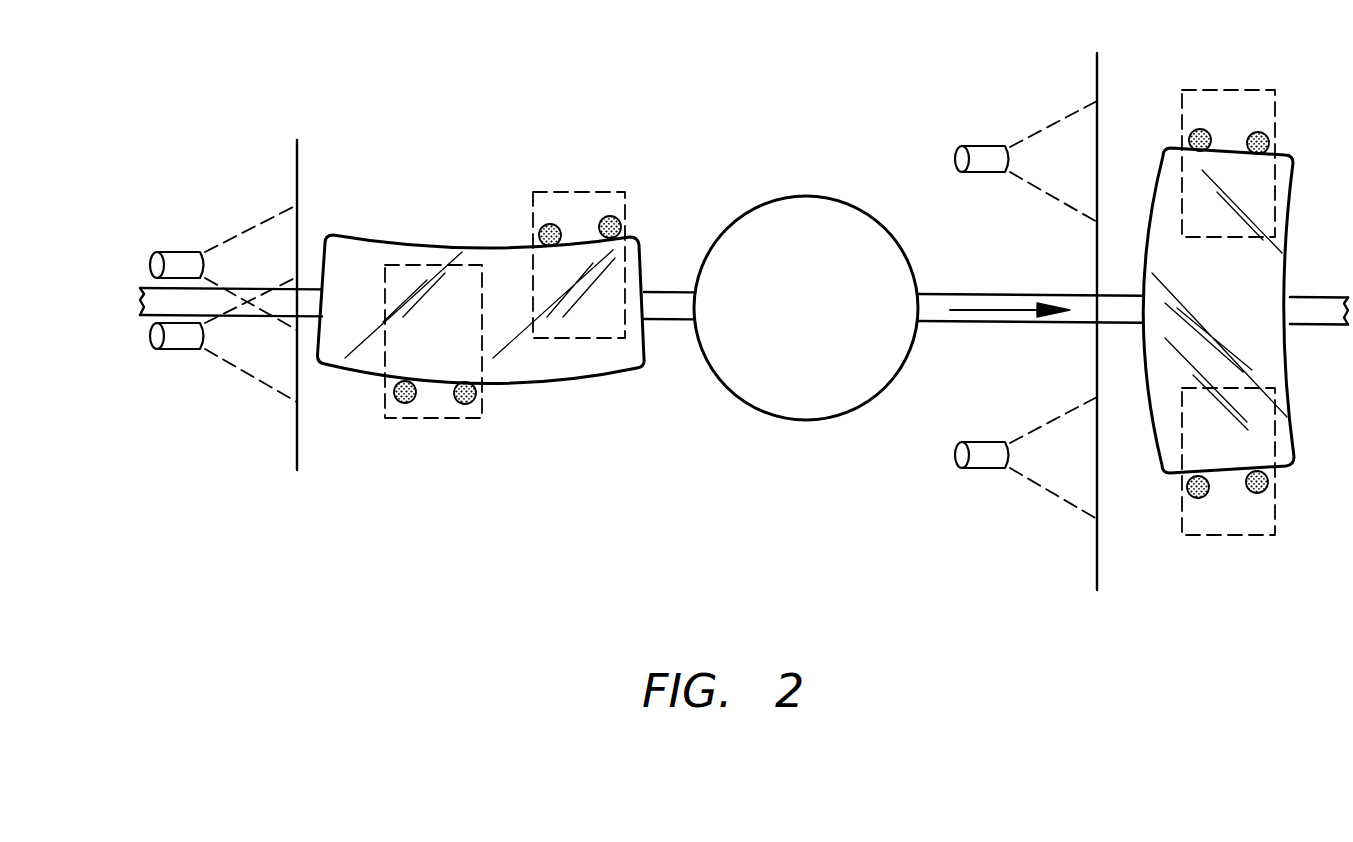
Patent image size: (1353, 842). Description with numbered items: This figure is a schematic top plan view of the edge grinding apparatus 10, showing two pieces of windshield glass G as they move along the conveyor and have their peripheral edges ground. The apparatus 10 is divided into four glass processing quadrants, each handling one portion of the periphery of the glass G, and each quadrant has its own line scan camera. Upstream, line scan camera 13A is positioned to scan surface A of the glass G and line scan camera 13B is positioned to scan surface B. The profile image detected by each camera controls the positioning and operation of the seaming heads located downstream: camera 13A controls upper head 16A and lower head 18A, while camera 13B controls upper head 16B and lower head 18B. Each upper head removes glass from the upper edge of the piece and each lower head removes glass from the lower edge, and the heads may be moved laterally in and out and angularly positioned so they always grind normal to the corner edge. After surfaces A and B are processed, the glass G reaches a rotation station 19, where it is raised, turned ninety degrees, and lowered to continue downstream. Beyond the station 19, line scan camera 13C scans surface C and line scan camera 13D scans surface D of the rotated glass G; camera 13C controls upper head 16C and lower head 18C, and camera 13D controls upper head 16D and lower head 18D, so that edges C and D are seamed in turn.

The apparatus for seaming or edge grinding a workpiece 10 is at (825, 148).
The line scan camera 13A is at (181, 256).
The line scan camera 13B is at (183, 347).
The line scan camera 13C is at (978, 150).
The line scan camera 13D is at (962, 460).
The upper seaming head 16A is at (557, 227).
The upper seaming head 16B is at (402, 400).
The upper seaming head 16C is at (1210, 128).
The upper seaming head 16D is at (1193, 496).
The lower seaming head 18A is at (618, 221).
The lower seaming head 18B is at (463, 404).
The lower seaming head 18C is at (1268, 140).
The lower seaming head 18D is at (1257, 495).
The rotation station 19 is at (893, 233).
The surface A of glass A is at (435, 248).
The surface B of glass B is at (615, 375).
The surface C of glass C is at (1225, 150).
The surface D of glass D is at (1227, 477).
The windshield glass G is at (360, 253).